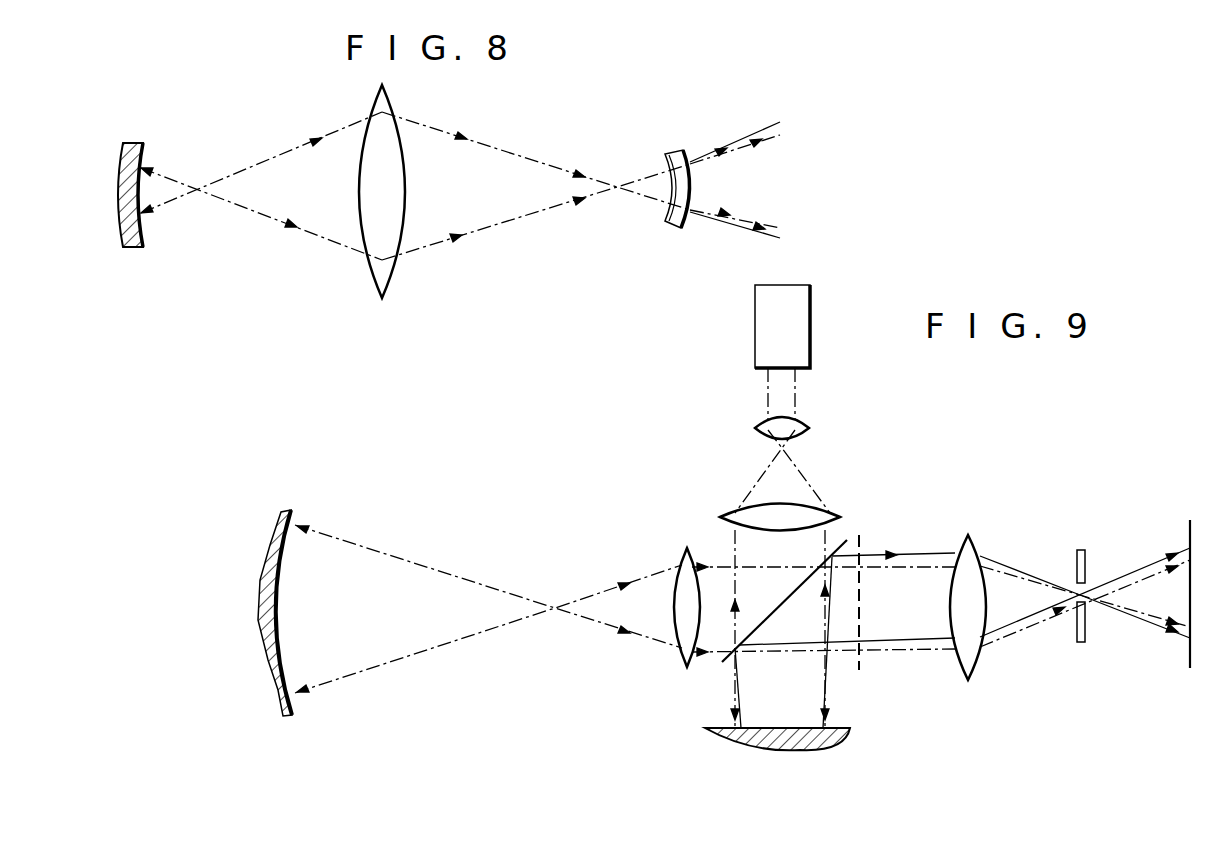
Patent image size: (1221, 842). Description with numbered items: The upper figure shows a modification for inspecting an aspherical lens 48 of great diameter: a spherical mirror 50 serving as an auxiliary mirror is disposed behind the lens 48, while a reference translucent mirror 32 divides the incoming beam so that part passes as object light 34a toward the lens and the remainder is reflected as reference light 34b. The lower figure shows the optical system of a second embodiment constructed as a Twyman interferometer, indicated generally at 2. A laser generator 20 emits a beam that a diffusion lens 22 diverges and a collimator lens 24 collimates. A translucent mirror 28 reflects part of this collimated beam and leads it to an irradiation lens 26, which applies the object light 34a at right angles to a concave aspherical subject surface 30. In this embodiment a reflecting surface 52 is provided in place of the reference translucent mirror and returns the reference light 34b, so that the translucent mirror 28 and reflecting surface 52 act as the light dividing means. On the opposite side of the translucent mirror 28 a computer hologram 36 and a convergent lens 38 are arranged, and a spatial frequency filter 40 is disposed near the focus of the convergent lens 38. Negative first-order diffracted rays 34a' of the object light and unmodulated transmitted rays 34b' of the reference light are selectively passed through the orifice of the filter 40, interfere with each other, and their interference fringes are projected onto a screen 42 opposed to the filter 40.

In FIG. 9, the focal point of light source image 2 is at (803, 450).
In FIG. 9, the laser generator 20 is at (810, 313).
In FIG. 9, the diffusion lens 22 is at (808, 424).
In FIG. 9, the collimator lens 24 is at (838, 515).
In FIG. 9, the irradiation lens 26 is at (681, 560).
In FIG. 9, the translucent mirror 28 is at (727, 662).
In FIG. 9, the concave aspherical surface 30 is at (277, 592).
In FIG. 8, the reference translucent mirror 32 is at (677, 229).
In FIG. 8, the object light 34a is at (415, 187).
In FIG. 9, the object light 34a is at (625, 607).
In FIG. 8, the reference light 34b is at (752, 161).
In FIG. 9, the reference light 34b is at (810, 629).
In FIG. 9, the negative first-order diffracted rays 34a' is at (1062, 580).
In FIG. 9, the unmodulated transmitted rays 34b' is at (847, 570).
In FIG. 9, the computer hologram 36 is at (860, 546).
In FIG. 9, the convergent lens 38 is at (977, 676).
In FIG. 9, the spatial frequency filter 40 is at (1086, 635).
In FIG. 9, the screen 42 is at (1189, 532).
In FIG. 8, the lens 48 is at (392, 276).
In FIG. 8, the spherical mirror 50 is at (143, 226).
In FIG. 9, the reflecting surface 52 is at (795, 727).